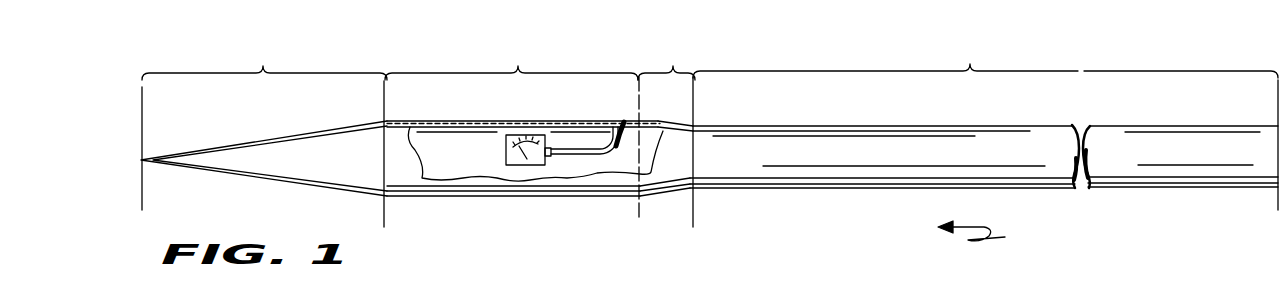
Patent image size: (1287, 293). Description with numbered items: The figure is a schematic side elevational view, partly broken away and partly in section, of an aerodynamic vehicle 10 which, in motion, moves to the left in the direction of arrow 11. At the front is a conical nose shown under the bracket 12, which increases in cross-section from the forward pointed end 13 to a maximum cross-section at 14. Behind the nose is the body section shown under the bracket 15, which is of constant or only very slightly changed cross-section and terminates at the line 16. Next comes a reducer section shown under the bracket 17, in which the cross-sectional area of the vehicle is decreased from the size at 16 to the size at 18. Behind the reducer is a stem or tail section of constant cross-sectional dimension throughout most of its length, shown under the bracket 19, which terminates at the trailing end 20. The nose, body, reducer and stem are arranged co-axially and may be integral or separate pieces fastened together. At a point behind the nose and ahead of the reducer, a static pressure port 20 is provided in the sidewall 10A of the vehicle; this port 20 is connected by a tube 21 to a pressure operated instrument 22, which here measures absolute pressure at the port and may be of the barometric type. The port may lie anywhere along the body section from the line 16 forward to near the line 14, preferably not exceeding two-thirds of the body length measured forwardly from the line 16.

The aerodynamic vehicle 10 is at (885, 188).
The sidewall 10A is at (581, 121).
The arrow 11 is at (987, 234).
The conical nose 12 is at (264, 118).
The forward pointed end 13 is at (145, 162).
The maximum cross-section of nose 14 is at (398, 159).
The body section 15 is at (524, 121).
The line terminating body section 16 is at (647, 157).
The reducer section 17 is at (666, 121).
The reducer end 18 is at (700, 163).
The stem or tail section 19 is at (984, 110).
The static pressure port 20 is at (627, 122).
The tube 21 is at (608, 158).
The pressure operated instrument 22 is at (537, 166).